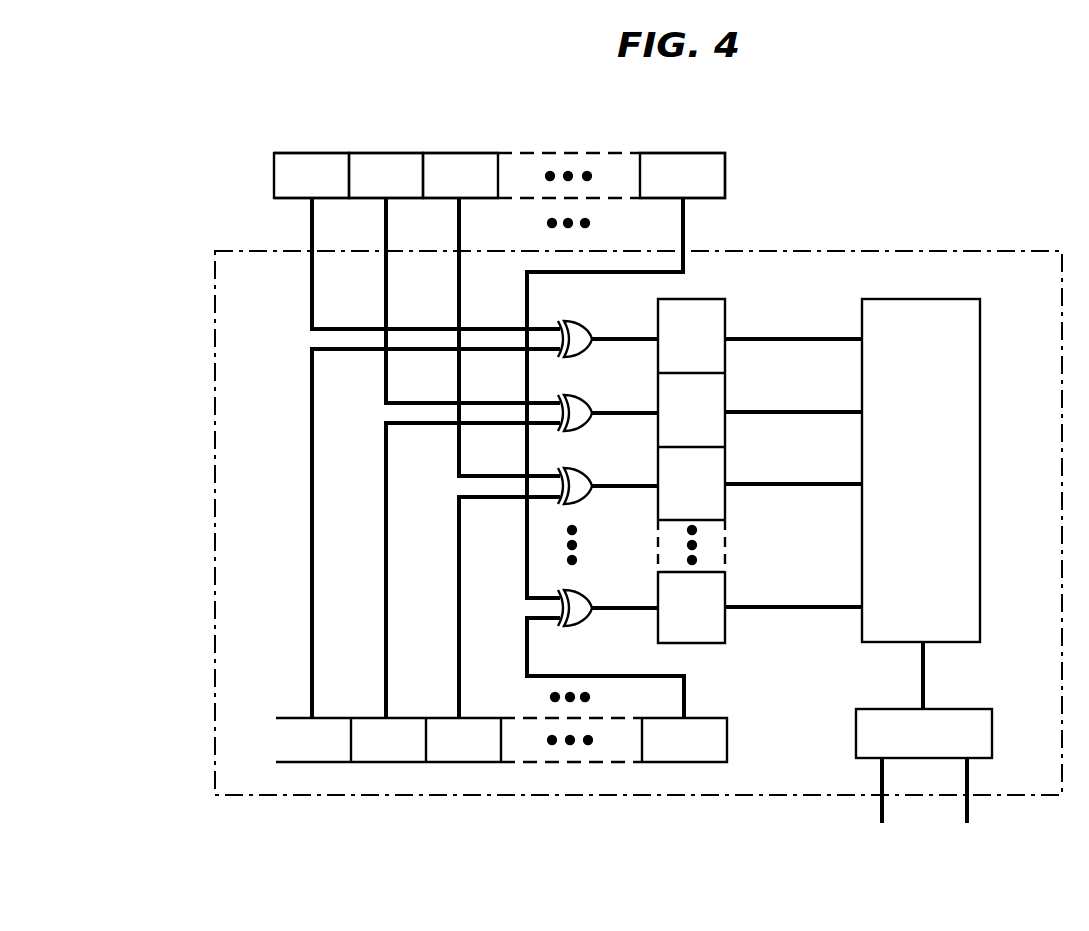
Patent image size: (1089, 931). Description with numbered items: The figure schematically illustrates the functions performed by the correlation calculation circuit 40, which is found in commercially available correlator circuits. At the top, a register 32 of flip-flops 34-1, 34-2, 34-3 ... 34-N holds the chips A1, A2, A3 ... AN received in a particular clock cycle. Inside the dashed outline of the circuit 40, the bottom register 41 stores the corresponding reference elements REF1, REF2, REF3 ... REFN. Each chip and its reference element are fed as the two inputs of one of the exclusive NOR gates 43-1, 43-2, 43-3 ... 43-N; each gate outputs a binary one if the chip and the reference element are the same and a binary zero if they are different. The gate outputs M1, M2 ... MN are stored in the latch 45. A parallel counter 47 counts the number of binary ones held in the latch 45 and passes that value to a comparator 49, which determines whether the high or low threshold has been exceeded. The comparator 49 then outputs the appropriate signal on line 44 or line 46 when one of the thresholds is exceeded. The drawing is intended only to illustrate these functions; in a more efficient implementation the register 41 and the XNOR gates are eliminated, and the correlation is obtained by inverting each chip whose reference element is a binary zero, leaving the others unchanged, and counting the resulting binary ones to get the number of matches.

The data word register 32 is at (247, 122).
The flip-flop 34-1 is at (311, 153).
The flip-flop 34-2 is at (386, 153).
The flip-flop 34-3 is at (460, 153).
The flip-flop 34-N is at (678, 153).
The correlation calculation circuit 40 is at (215, 508).
The register 41 is at (289, 717).
The exclusive NOR gate 43-1 is at (566, 322).
The exclusive NOR gate 43-2 is at (566, 395).
The exclusive NOR gate 43-3 is at (566, 468).
The exclusive NOR gate 43-N is at (566, 590).
The line 44 is at (882, 808).
The latch 45 is at (725, 318).
The line 46 is at (967, 808).
The parallel counter 47 is at (981, 338).
The comparator 49 is at (993, 725).